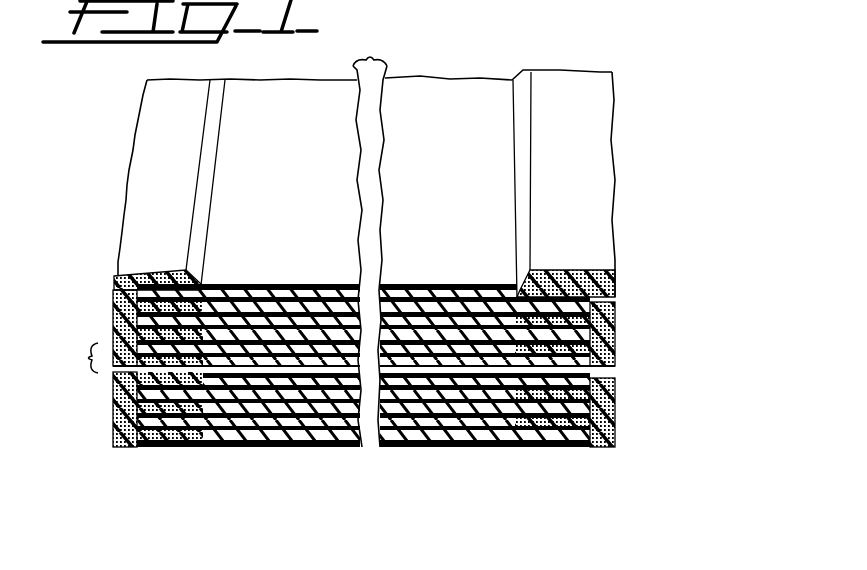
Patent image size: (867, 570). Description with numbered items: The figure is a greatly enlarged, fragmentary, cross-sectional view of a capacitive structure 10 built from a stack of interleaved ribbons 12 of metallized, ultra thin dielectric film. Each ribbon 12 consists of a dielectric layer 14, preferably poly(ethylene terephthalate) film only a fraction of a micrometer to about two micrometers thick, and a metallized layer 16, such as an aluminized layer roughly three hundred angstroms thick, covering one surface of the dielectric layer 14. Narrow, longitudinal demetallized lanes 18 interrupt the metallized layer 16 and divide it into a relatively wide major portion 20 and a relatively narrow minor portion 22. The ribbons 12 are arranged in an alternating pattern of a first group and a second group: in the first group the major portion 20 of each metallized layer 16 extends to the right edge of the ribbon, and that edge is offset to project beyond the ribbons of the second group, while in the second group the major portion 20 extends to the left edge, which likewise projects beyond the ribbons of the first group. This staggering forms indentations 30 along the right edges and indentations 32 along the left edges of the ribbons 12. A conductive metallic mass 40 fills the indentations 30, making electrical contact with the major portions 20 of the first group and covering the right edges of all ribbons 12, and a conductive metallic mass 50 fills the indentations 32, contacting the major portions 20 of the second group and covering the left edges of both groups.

The capacitive structure 10 is at (475, 47).
The ribbons 12 is at (413, 305).
The dielectric layer 14 is at (308, 286).
The metallized layer 16 is at (441, 287).
The demetallized lanes 18 is at (250, 296).
The major portion 20 is at (207, 286).
The minor portion 22 is at (226, 287).
The indentations 30 is at (615, 307).
The indentations 32 is at (118, 294).
The conductive metallic mass 40 is at (617, 325).
The conductive metallic mass 50 is at (115, 310).